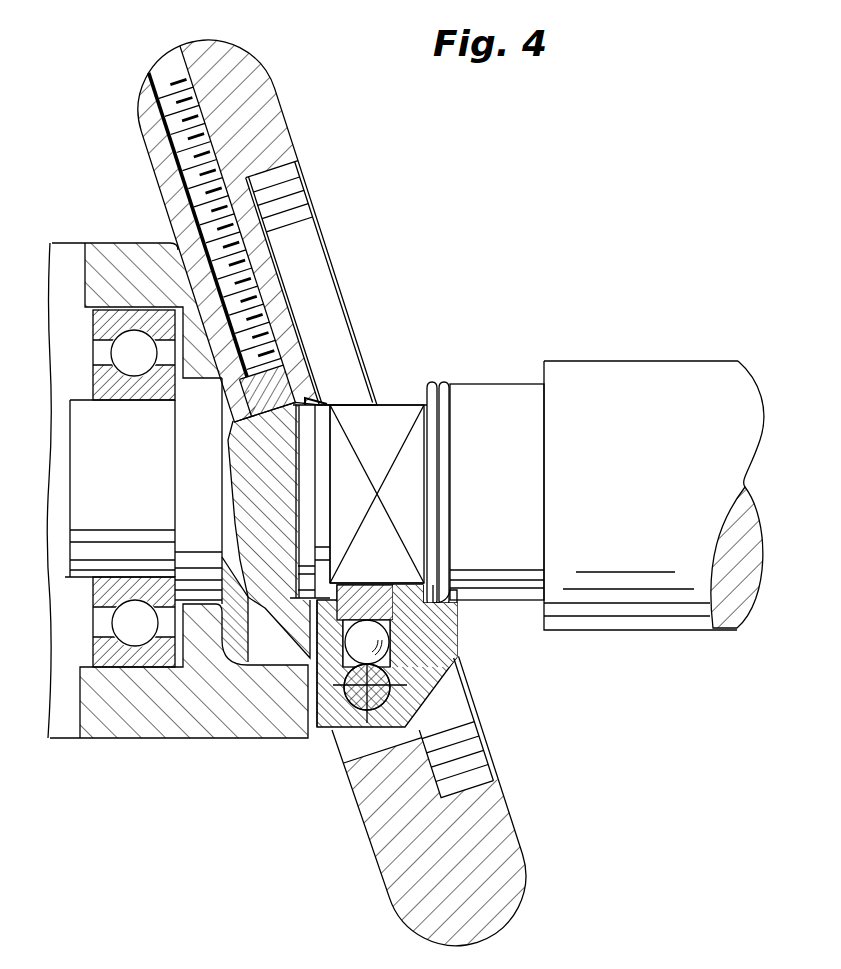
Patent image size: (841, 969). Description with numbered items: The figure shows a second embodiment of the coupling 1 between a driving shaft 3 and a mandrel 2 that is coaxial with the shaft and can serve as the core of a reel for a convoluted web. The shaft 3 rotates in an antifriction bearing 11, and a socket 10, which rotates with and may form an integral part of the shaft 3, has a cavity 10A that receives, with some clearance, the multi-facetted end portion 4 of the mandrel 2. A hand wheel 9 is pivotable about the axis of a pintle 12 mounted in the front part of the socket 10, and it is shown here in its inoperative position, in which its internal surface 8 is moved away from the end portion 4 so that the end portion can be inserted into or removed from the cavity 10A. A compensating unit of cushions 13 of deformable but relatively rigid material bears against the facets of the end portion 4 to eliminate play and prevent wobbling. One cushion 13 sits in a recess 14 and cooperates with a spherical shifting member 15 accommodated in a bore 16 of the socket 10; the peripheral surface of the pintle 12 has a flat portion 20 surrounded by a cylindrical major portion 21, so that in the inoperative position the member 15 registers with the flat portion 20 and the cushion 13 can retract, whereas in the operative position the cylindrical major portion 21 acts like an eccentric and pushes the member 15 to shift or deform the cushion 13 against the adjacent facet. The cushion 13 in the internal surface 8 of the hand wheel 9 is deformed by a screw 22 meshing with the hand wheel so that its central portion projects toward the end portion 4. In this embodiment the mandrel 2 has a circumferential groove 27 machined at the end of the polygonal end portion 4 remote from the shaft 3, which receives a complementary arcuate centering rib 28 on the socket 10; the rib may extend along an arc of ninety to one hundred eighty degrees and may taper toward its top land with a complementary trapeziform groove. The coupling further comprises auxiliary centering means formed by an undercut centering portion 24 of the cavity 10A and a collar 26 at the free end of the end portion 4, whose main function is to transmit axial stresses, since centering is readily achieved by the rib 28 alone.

The coupling 1 is at (403, 343).
The mandrel 2 is at (667, 615).
The driving shaft 3 is at (93, 437).
The multi-facetted end portion 4 is at (366, 453).
The internal surface 8 is at (262, 410).
The hand wheel 9 is at (140, 133).
The socket 10 is at (267, 652).
The cavity 10A is at (318, 398).
The antifriction bearing 11 is at (140, 673).
The pintle 12 is at (418, 698).
The cushion 13 is at (267, 436).
The recess 14 is at (340, 602).
The spherical member 15 is at (373, 642).
The bore 16 is at (343, 655).
The flat portion 20 is at (390, 675).
The cylindrical major portion 21 is at (357, 707).
The screw 22 is at (263, 327).
The undercut centering portion 24 is at (296, 583).
The collar 26 is at (322, 485).
The circumferential groove 27 is at (443, 418).
The centering rib 28 is at (457, 607).